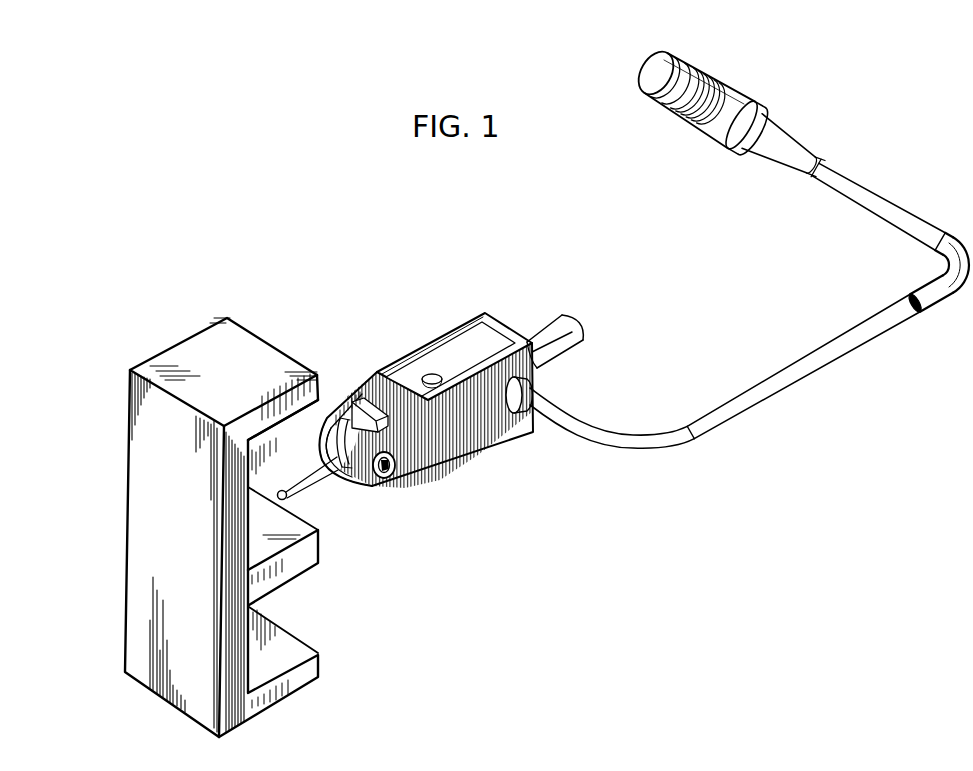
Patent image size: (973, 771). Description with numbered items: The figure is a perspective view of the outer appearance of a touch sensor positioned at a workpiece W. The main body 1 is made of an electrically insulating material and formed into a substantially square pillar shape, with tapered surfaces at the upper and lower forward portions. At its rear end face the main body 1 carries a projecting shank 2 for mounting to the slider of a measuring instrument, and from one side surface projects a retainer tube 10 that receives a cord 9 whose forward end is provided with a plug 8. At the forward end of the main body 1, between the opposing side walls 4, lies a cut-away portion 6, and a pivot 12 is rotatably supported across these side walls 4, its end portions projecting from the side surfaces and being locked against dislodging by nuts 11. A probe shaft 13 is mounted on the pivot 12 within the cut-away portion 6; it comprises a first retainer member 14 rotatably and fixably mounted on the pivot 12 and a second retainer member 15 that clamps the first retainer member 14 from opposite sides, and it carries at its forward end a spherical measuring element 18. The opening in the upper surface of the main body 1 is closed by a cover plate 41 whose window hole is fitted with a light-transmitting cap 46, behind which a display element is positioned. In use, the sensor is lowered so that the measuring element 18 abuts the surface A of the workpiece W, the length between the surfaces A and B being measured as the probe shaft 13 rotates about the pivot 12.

The main body 1 is at (457, 452).
The shank 2 is at (550, 330).
The opposing side walls 4 is at (322, 423).
The cut-away portion 6 is at (366, 404).
The plug 8 is at (695, 110).
The cord 9 is at (657, 433).
The retainer tube 10 is at (534, 380).
The nuts 11 is at (394, 478).
The pivot 12 is at (402, 478).
The probe shaft 13 is at (325, 494).
The first retainer member 14 is at (321, 453).
The second retainer member 15 is at (320, 432).
The spherical measuring element 18 is at (278, 492).
The cover plate 41 is at (463, 345).
The light-transmitting cap 46 is at (428, 374).
The workpiece W is at (131, 518).
The surface A is at (280, 540).
The surface B is at (272, 437).